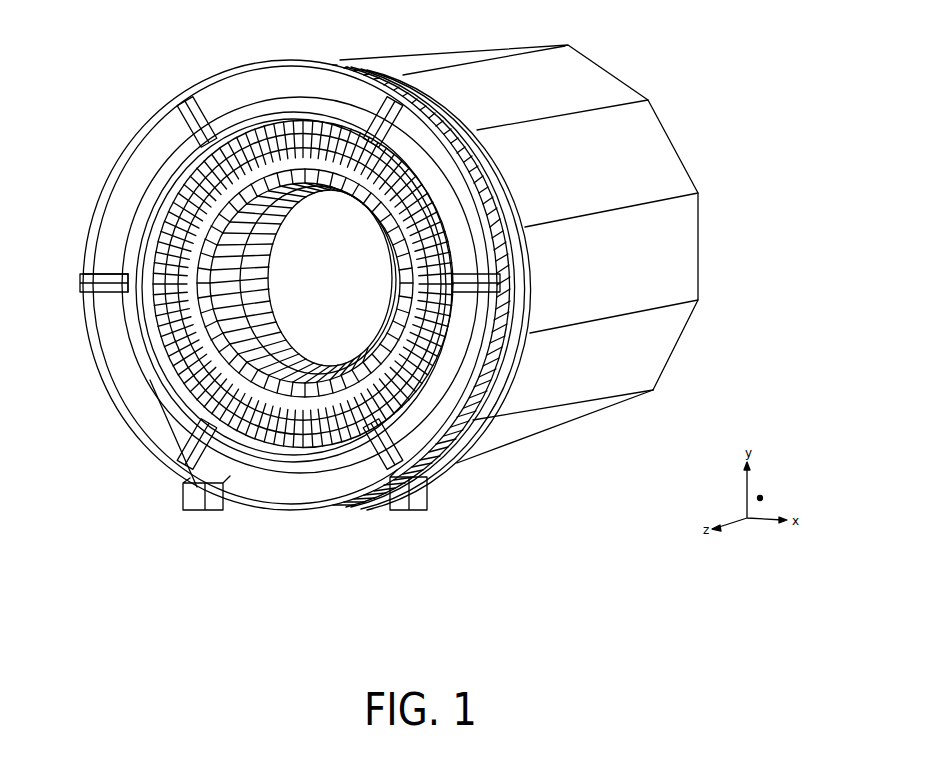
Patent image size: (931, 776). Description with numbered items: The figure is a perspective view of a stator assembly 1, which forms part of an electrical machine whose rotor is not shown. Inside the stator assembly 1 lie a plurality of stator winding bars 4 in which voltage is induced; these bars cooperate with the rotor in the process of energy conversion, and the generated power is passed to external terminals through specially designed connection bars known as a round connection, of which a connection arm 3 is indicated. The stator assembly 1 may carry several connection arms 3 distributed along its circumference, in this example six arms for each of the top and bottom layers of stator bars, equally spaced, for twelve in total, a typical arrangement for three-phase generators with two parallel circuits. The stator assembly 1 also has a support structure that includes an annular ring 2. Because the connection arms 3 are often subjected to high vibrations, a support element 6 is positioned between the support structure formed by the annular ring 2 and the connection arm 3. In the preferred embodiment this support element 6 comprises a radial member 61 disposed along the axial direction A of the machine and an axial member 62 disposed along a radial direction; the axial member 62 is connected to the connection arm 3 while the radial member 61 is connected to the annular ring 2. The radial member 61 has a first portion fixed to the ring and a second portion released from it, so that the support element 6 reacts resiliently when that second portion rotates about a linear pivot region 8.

The stator assembly 1 is at (698, 127).
The annular ring 2 is at (497, 345).
The connection arm 3 is at (215, 118).
The stator winding bars 4 is at (290, 238).
The support element 6 is at (180, 133).
The radial member 61 is at (84, 292).
The axial member 62 is at (124, 296).
The linear pivot region 8 is at (175, 462).
The axial direction A is at (171, 447).